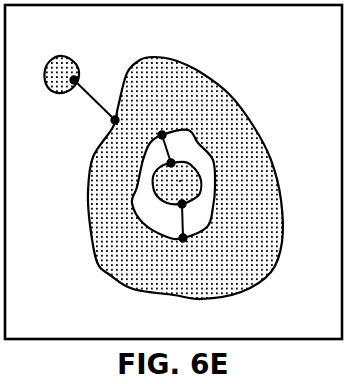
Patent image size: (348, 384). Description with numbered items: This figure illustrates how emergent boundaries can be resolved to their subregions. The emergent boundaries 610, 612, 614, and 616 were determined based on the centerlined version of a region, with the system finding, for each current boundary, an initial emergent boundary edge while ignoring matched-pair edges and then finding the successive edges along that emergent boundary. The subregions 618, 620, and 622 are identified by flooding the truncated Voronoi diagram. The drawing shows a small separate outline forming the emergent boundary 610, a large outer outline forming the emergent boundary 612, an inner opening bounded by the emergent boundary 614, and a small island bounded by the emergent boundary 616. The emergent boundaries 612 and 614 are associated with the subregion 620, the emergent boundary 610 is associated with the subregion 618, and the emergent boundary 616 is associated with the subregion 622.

The emergent boundary 610 is at (55, 92).
The emergent boundary 612 is at (256, 128).
The emergent boundary 614 is at (131, 198).
The emergent boundary 616 is at (199, 196).
The subregion 618 is at (71, 70).
The subregion 620 is at (185, 178).
The subregion 622 is at (181, 181).